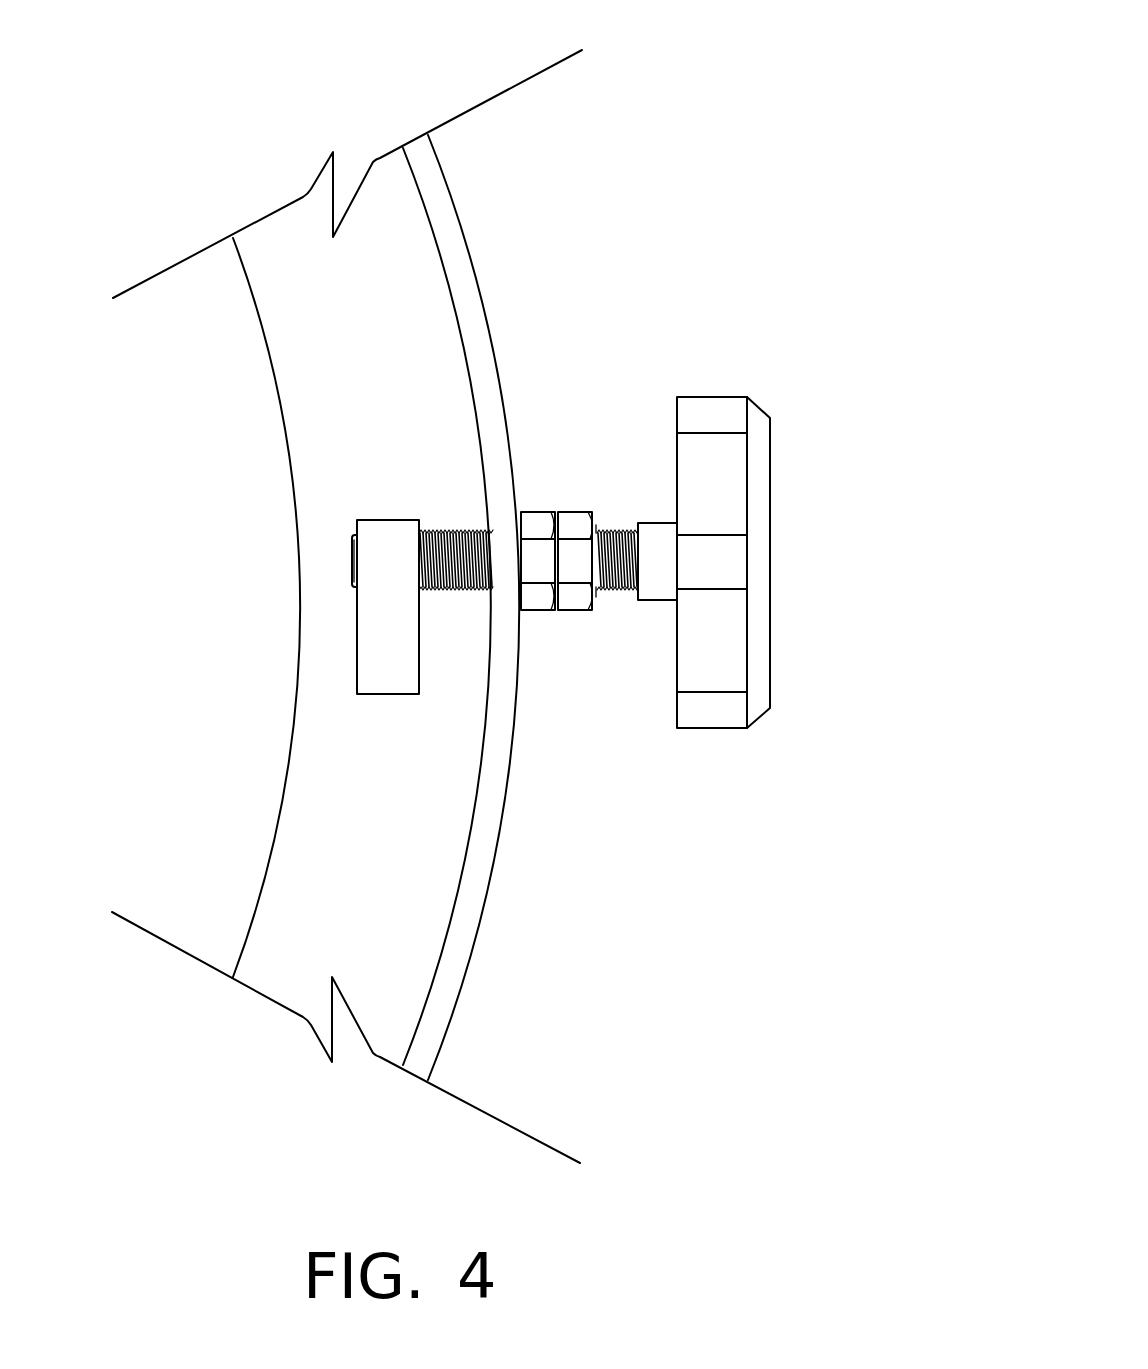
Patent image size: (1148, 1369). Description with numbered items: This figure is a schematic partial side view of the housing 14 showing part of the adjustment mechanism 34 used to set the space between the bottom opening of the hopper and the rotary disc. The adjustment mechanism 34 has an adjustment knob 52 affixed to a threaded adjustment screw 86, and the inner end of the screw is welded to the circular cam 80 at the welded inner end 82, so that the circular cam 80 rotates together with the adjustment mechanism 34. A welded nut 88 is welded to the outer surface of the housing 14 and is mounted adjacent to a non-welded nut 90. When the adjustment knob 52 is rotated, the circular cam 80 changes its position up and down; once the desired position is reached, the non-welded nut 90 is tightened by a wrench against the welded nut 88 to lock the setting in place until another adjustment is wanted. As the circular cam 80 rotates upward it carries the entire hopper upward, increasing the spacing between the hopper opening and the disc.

The housing 14 is at (457, 212).
The adjustment mechanism 34 is at (792, 564).
The adjustment knob 52 is at (757, 718).
The circular cam 80 is at (420, 678).
The welded inner end 82 is at (354, 540).
The threaded adjustment screw 86 is at (627, 590).
The welded nut 88 is at (533, 510).
The non-welded nut 90 is at (573, 512).